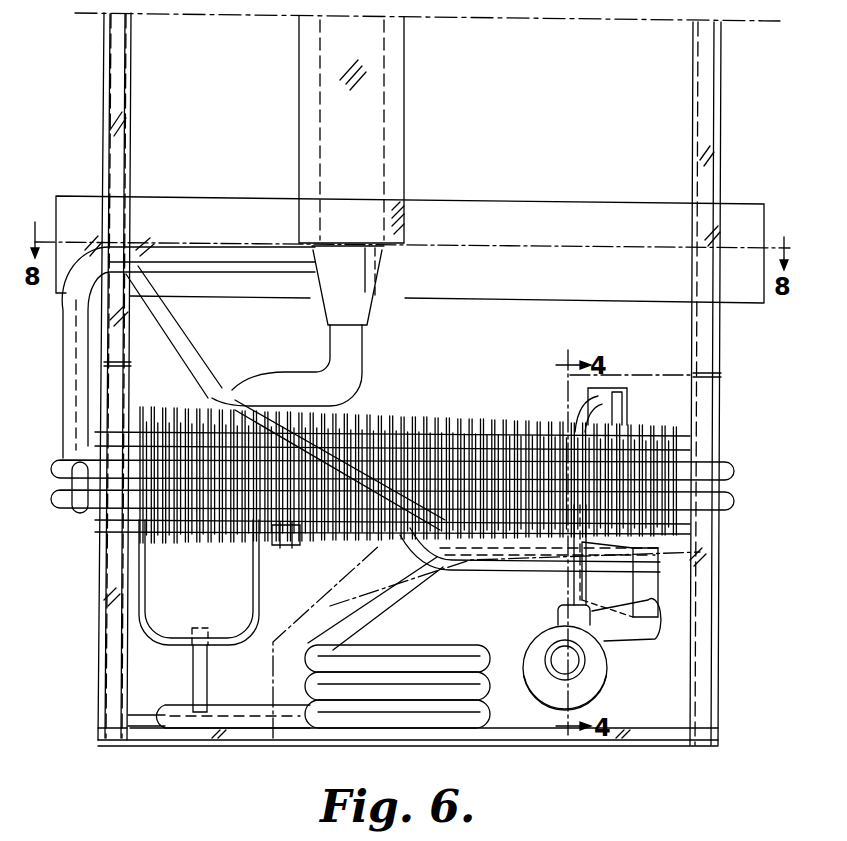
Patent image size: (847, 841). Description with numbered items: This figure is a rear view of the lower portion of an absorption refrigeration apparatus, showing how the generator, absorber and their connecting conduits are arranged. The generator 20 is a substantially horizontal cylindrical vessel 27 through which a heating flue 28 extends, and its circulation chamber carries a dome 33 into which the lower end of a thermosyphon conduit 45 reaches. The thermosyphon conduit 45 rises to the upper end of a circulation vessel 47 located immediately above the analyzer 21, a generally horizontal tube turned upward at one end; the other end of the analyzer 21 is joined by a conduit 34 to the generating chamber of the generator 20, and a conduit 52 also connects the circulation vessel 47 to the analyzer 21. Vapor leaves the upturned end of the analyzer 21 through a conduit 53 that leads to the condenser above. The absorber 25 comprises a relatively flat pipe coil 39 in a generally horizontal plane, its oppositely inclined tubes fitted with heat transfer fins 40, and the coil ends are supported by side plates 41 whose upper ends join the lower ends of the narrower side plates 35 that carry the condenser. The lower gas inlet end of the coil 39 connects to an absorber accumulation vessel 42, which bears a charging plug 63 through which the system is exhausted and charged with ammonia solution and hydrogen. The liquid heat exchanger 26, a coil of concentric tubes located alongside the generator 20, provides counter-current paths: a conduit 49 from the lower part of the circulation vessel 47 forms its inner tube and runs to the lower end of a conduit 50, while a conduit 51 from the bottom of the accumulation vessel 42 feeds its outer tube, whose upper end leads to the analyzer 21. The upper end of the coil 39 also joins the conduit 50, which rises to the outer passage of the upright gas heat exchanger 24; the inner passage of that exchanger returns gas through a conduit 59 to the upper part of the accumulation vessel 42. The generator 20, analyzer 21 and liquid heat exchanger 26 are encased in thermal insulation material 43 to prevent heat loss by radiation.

The generator 20 is at (640, 697).
The analyzer 21 is at (512, 586).
The gas heat exchanger 24 is at (385, 263).
The absorber 25 is at (446, 406).
The liquid heat exchanger 26 is at (435, 666).
The cylindrical vessel 27 is at (533, 700).
The flue 28 is at (546, 660).
The dome 33 is at (558, 615).
The conduit 34 is at (660, 588).
The side plates 35 is at (694, 140).
The absorber coil 39 is at (460, 455).
The heat transfer fins 40 is at (516, 455).
The side plates 41 is at (690, 410).
The absorber accumulation vessel 42 is at (258, 590).
The thermal insulation material 43 is at (278, 655).
The thermosyphon conduit 45 is at (587, 588).
The circulation vessel 47 is at (606, 390).
The conduit 49 is at (486, 560).
The conduit 50 is at (68, 392).
The conduit 51 is at (207, 696).
The conduit 52 is at (622, 405).
The conduit 53 is at (190, 356).
The conduit 59 is at (290, 382).
The charging plug 63 is at (290, 548).